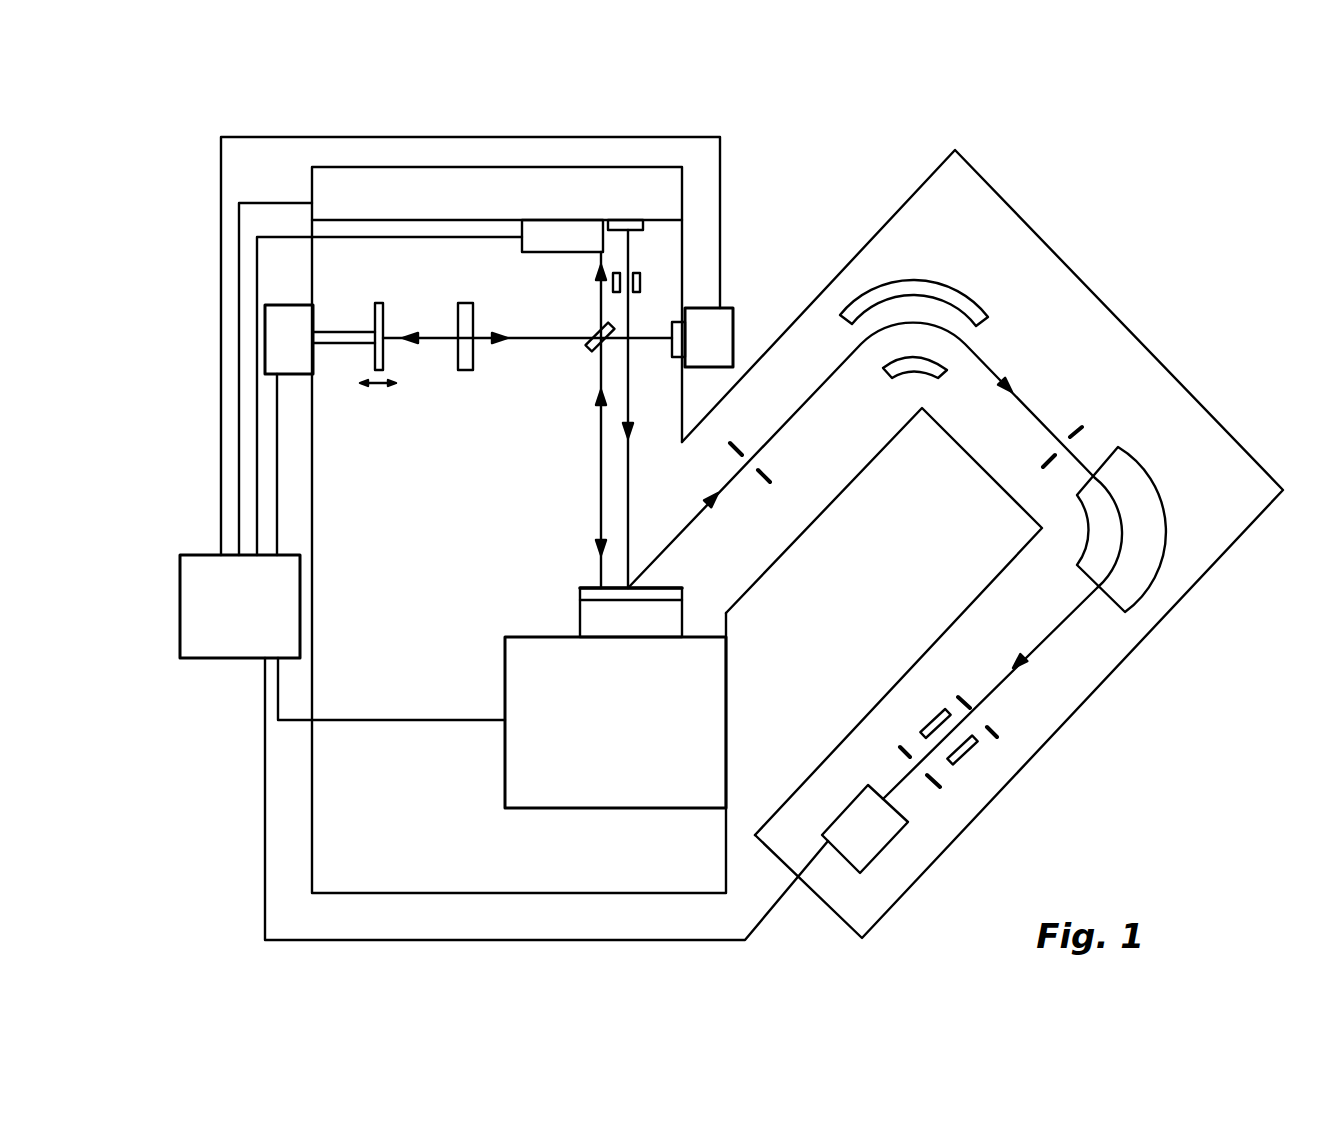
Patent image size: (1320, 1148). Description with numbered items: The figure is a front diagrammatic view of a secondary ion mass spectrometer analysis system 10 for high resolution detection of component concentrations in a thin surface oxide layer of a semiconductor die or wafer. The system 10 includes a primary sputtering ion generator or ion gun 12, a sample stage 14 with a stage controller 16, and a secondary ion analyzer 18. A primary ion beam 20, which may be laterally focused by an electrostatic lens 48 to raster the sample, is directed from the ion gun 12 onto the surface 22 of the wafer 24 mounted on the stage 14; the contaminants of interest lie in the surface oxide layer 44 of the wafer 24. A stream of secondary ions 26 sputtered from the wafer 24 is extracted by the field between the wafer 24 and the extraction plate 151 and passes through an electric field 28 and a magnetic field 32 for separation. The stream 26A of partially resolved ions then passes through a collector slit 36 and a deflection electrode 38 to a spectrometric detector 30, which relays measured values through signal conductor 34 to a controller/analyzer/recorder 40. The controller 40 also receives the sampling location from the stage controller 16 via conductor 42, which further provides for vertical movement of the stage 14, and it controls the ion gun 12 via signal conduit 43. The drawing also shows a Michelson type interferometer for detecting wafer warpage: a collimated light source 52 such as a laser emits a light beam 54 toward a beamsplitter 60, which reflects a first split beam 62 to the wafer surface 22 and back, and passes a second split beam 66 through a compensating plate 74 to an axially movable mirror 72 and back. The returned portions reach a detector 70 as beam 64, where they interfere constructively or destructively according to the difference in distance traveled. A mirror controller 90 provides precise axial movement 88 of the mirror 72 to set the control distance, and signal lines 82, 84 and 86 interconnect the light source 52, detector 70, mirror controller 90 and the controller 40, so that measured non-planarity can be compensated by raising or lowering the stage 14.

The secondary ion mass spectrometer (SIMS) analysis system 10 is at (955, 544).
The primary sputtering ion generator or ion gun 12 is at (457, 210).
The sample stage 14 is at (641, 630).
The stage controller 16 is at (626, 722).
The secondary ion analyzer 18 is at (1180, 597).
The primary ion beam 20 is at (628, 248).
The wafer surface 22 is at (590, 587).
The semiconductor die or wafer 24 is at (580, 597).
The stream of secondary ions 26 is at (690, 528).
The stream of partially resolved secondary ions 26A is at (1060, 632).
The electric field 28 is at (948, 300).
The spectrometric detector 30 is at (865, 850).
The magnetic field 32 is at (1152, 487).
The signal conductor 34 is at (265, 810).
The collector slit 36 is at (998, 730).
The deflection electrode 38 is at (960, 753).
The controller/analyzer/recorder 40 is at (250, 615).
The conductor 42 is at (278, 690).
The signal conduit 43 is at (295, 200).
The surface oxide layer 44 is at (682, 590).
The electrostatic lens 48 is at (641, 277).
The collimated light source 52 is at (725, 333).
The light beam 54 is at (648, 338).
The beamsplitter 60 is at (590, 350).
The first split beam 62 is at (602, 457).
The beam 64 is at (593, 322).
The second split beam 66 is at (528, 334).
The detector 70 is at (571, 248).
The axially movable mirror 72 is at (383, 317).
The compensating plate 74 is at (466, 372).
The signal line 82 is at (722, 141).
The signal line 84 is at (257, 265).
The signal line 86 is at (277, 465).
The axial movement 88 is at (378, 388).
The mirror controller 90 is at (304, 352).
The extraction plate 151 is at (790, 470).